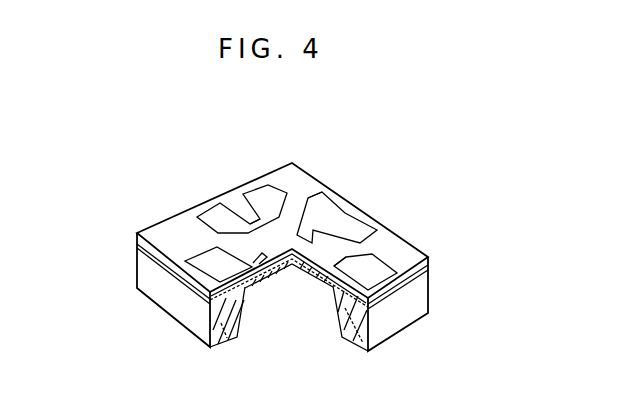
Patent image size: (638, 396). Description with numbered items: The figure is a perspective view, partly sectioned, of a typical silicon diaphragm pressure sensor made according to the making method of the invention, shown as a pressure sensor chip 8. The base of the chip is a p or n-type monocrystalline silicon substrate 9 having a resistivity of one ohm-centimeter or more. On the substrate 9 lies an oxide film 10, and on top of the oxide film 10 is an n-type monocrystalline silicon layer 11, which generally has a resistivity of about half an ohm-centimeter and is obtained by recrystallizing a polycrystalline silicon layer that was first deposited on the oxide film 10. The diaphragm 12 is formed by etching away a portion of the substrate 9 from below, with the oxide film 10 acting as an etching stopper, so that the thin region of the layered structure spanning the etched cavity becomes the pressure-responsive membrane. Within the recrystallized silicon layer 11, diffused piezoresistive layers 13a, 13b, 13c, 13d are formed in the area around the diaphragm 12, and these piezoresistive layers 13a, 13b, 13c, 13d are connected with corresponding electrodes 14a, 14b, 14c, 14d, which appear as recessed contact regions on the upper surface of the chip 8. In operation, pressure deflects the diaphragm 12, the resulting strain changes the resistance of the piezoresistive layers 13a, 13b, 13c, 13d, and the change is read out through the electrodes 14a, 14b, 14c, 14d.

The pressure sensor chip 8 is at (316, 190).
The monocrystalline silicon substrate 9 is at (422, 297).
The oxide film 10 is at (430, 271).
The n-type monocrystalline silicon layer 11 is at (430, 260).
The diaphragm 12 is at (313, 277).
The diffused piezoresistive layer 13a is at (305, 226).
The diffused piezoresistive layer 13b is at (338, 263).
The diffused piezoresistive layer 13c is at (264, 266).
The diffused piezoresistive layer 13d is at (228, 176).
The electrode 14a is at (340, 208).
The electrode 14b is at (380, 277).
The electrode 14c is at (208, 267).
The electrode 14d is at (262, 192).